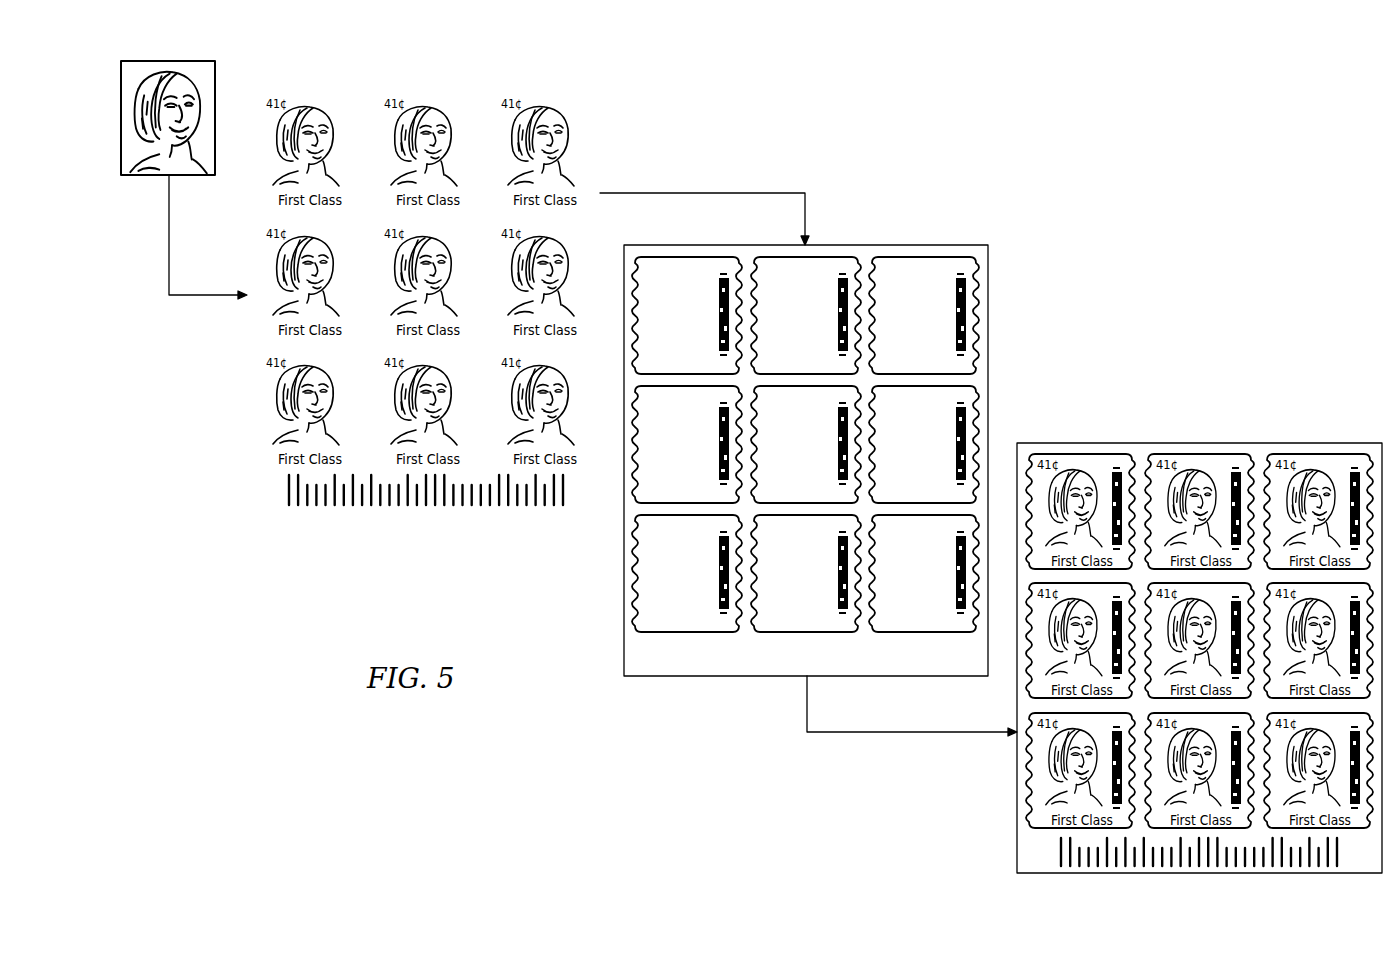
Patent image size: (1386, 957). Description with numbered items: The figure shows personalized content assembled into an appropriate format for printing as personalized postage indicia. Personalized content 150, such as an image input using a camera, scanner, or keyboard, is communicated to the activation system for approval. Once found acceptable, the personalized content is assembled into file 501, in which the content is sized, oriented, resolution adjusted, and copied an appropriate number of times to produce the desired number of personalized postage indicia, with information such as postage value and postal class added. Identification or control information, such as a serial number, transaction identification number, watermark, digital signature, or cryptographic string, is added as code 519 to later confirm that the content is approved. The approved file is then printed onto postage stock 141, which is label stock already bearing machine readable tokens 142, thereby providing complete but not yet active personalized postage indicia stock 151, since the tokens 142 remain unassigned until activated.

The personalized content 150 is at (210, 176).
The file 501 is at (588, 111).
The postage stock 141 is at (902, 245).
The machine readable tokens 142 is at (967, 281).
The personalized postage indicia stock 151 is at (1016, 798).
The code 519 is at (276, 492).